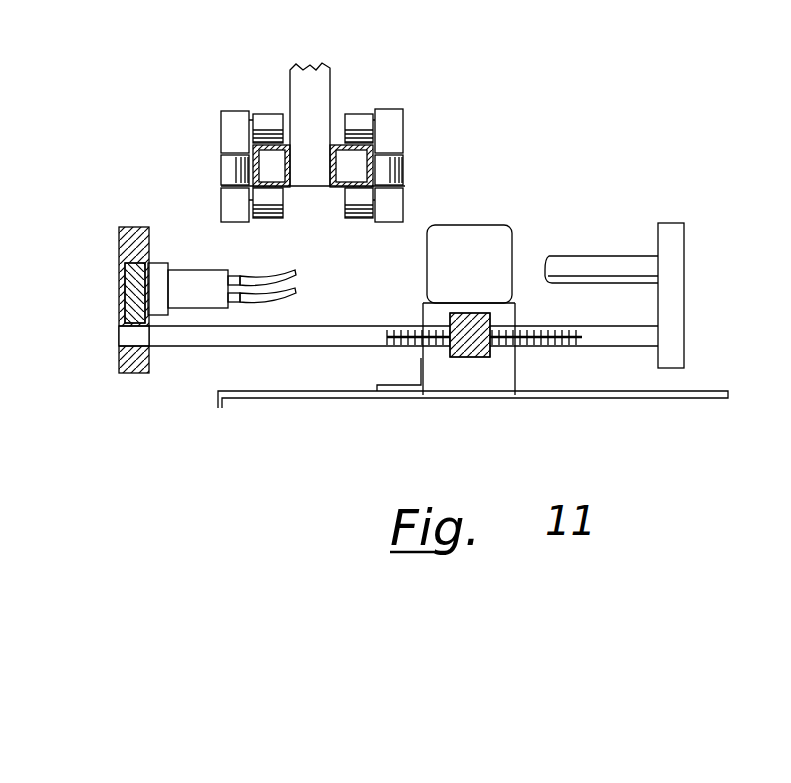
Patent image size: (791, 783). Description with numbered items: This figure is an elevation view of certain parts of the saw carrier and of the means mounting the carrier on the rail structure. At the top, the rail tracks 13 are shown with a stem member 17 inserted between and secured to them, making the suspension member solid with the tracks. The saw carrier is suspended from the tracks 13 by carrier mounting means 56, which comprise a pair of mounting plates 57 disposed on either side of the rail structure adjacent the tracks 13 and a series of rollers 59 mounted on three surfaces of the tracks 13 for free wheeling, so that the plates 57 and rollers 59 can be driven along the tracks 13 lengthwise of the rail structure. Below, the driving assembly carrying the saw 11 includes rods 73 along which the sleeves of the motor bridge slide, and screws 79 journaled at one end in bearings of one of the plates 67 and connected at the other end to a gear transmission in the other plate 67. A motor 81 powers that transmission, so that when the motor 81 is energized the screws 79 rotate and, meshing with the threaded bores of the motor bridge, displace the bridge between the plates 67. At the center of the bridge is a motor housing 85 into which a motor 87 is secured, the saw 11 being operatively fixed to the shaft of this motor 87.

The saw 11 is at (612, 400).
The rail tracks 13 is at (353, 160).
The stem members 17 is at (315, 92).
The carrier mounting means 56 is at (403, 109).
The mounting plates 57 is at (234, 130).
The rollers 59 is at (265, 113).
The plates 67 is at (133, 243).
The rods 73 is at (598, 267).
The screws 79 is at (119, 300).
The motor 81 is at (215, 252).
The motor housing 85 is at (515, 380).
The motor 87 is at (512, 238).